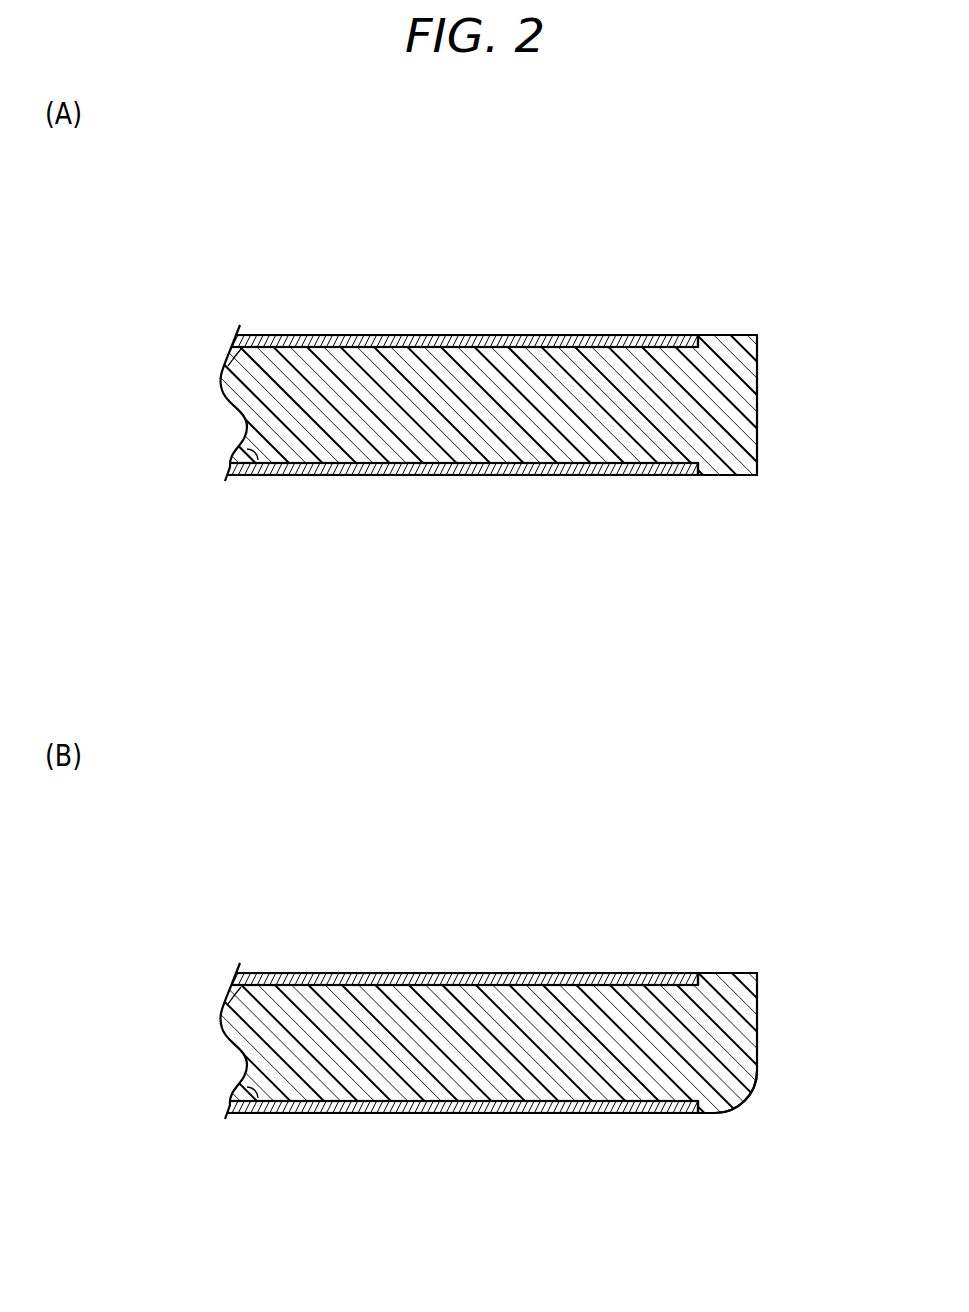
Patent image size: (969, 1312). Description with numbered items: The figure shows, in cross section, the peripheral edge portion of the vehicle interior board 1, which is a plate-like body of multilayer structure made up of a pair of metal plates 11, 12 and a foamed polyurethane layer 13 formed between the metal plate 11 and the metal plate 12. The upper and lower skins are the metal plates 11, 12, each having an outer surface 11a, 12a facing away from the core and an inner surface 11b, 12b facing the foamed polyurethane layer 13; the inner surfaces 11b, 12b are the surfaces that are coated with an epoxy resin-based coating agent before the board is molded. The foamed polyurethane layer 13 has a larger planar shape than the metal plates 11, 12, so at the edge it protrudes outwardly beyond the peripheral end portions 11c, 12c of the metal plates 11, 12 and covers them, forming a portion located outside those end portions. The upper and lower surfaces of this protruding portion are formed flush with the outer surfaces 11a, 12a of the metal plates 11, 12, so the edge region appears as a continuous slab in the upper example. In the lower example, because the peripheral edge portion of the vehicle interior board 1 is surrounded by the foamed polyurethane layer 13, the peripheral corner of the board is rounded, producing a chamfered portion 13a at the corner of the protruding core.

The vehicle interior board 1 is at (218, 196).
The metal plate 11 is at (408, 475).
The outer surface of metal plate 11a is at (605, 475).
The inner surface of metal plate 11b is at (247, 449).
The peripheral end portion of metal plate 11c is at (720, 475).
The metal plate 12 is at (474, 335).
The outer surface of metal plate 12a is at (575, 335).
The inner surface of metal plate 12b is at (228, 366).
The peripheral end portion of metal plate 12c is at (700, 338).
The foamed polyurethane layer 13 is at (394, 360).
The chamfered portion 13a is at (744, 1098).